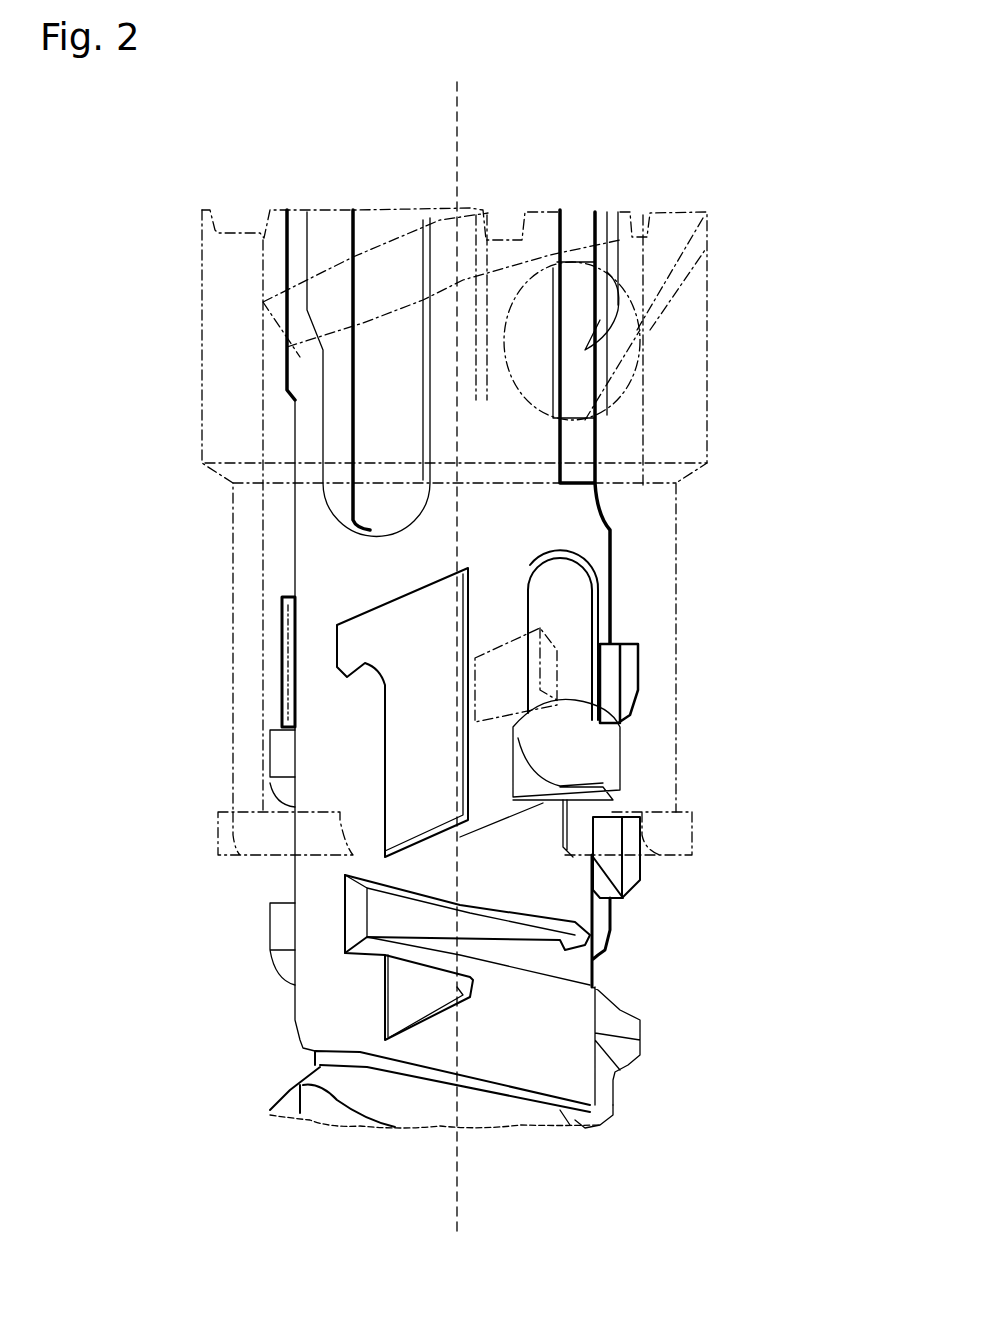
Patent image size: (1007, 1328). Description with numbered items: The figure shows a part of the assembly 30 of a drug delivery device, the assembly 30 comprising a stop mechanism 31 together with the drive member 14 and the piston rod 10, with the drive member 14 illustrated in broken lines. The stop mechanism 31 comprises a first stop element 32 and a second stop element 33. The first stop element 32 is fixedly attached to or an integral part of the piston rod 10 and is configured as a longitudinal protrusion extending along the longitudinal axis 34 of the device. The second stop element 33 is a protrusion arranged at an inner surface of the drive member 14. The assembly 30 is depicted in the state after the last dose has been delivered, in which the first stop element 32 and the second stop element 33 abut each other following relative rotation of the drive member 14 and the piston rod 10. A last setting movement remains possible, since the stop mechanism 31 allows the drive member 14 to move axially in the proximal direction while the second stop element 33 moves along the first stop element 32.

The piston rod 10 is at (600, 992).
The drive member 14 is at (645, 448).
The assembly 30 is at (163, 377).
The stop mechanism 31 is at (400, 657).
The first stop element 32 is at (423, 707).
The second stop element 33 is at (515, 663).
The longitudinal axis 34 is at (457, 153).